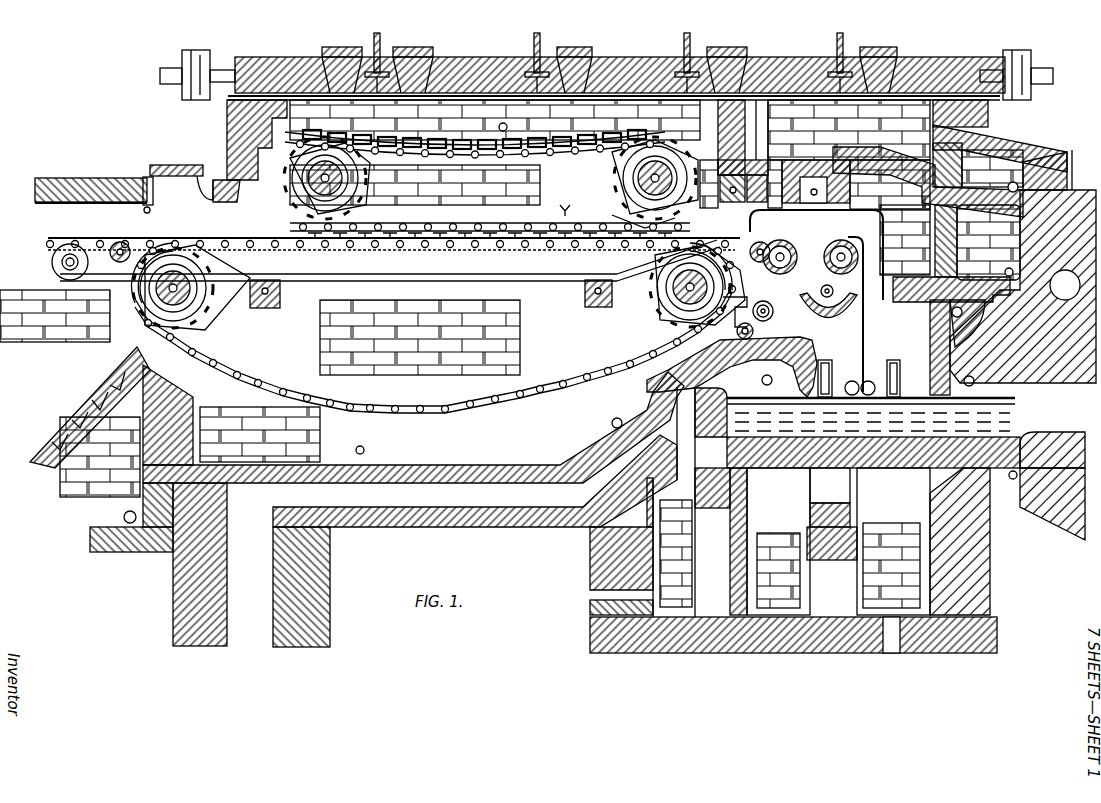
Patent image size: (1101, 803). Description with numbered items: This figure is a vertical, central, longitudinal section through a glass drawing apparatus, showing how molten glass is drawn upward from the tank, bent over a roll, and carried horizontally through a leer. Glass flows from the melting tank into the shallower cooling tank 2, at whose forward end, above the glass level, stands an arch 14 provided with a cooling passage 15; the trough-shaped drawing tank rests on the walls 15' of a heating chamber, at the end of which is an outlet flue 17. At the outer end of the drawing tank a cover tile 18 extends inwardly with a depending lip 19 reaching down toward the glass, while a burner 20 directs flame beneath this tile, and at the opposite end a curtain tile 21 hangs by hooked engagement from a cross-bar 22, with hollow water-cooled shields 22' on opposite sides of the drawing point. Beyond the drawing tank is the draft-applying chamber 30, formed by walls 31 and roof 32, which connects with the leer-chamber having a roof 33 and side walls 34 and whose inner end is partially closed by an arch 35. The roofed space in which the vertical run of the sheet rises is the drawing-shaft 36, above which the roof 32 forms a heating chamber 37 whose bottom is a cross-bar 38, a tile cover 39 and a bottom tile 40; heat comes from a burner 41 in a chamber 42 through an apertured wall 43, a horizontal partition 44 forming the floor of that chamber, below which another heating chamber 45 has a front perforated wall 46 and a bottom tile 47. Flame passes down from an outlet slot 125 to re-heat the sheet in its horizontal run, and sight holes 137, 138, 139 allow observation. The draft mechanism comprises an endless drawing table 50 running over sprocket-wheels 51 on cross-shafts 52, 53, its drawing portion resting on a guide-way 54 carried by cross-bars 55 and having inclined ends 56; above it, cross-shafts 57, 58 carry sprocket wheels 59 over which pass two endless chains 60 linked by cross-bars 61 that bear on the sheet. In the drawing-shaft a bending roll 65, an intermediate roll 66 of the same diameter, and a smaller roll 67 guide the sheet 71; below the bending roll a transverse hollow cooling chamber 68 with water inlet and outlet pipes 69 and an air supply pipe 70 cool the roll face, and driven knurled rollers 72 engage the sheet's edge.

The cooling tank 2 is at (873, 405).
The arch 14 is at (1074, 175).
The cooling passage 15 is at (1047, 405).
The walls 15' is at (805, 560).
The outlet flue 17 is at (436, 494).
The cover tile 18 is at (704, 364).
The depending lip 19 is at (823, 360).
The burner 20 is at (762, 380).
The curtain tile 21 is at (930, 335).
The cross-bar 22 is at (964, 323).
The hollow water-cooled shields 22' is at (903, 378).
The draft-applying chamber 30 is at (570, 143).
The walls 31 is at (637, 103).
The roof 32 is at (478, 57).
The roof 33 is at (45, 177).
The side walls 34 is at (65, 303).
The arch 35 is at (745, 105).
The drawing-shaft 36 is at (844, 227).
The heating chamber 37 is at (849, 187).
The cross-bar 38 is at (815, 206).
The tile cover 39 is at (793, 206).
The bottom tile 40 is at (912, 160).
The burner 41 is at (1016, 183).
The chamber 42 is at (992, 171).
The apertured wall 43 is at (985, 160).
The horizontal partition 44 is at (1060, 165).
The heating chamber 45 is at (988, 242).
The front perforated wall 46 is at (957, 252).
The bottom tile 47 is at (908, 302).
The endless drawing table 50 is at (250, 378).
The sprocket-wheels 51 is at (203, 310).
The cross-shaft 52 is at (185, 290).
The cross-shaft 53 is at (672, 290).
The guide-way 54 is at (542, 282).
The cross-bars 55 is at (282, 298).
The inclined ends 56 is at (613, 288).
The cross-shaft 57 is at (645, 204).
The cross-shaft 58 is at (411, 178).
The sprocket wheels 59 is at (355, 190).
The endless chains 60 is at (487, 156).
The cross-bars 61 is at (490, 140).
The bending roll 65 is at (824, 262).
The intermediate roll 66 is at (780, 275).
The smaller roll 67 is at (755, 260).
The transverse hollow cooling chamber 68 is at (838, 312).
The water inlet and outlet pipes 69 is at (810, 305).
The air supply pipe 70 is at (834, 292).
The sheet 71 is at (863, 332).
The driven knurled rollers 72 is at (866, 382).
The outlet slot 125 is at (770, 180).
The sight hole 137 is at (366, 451).
The sight hole 138 is at (612, 425).
The sight hole 139 is at (508, 125).